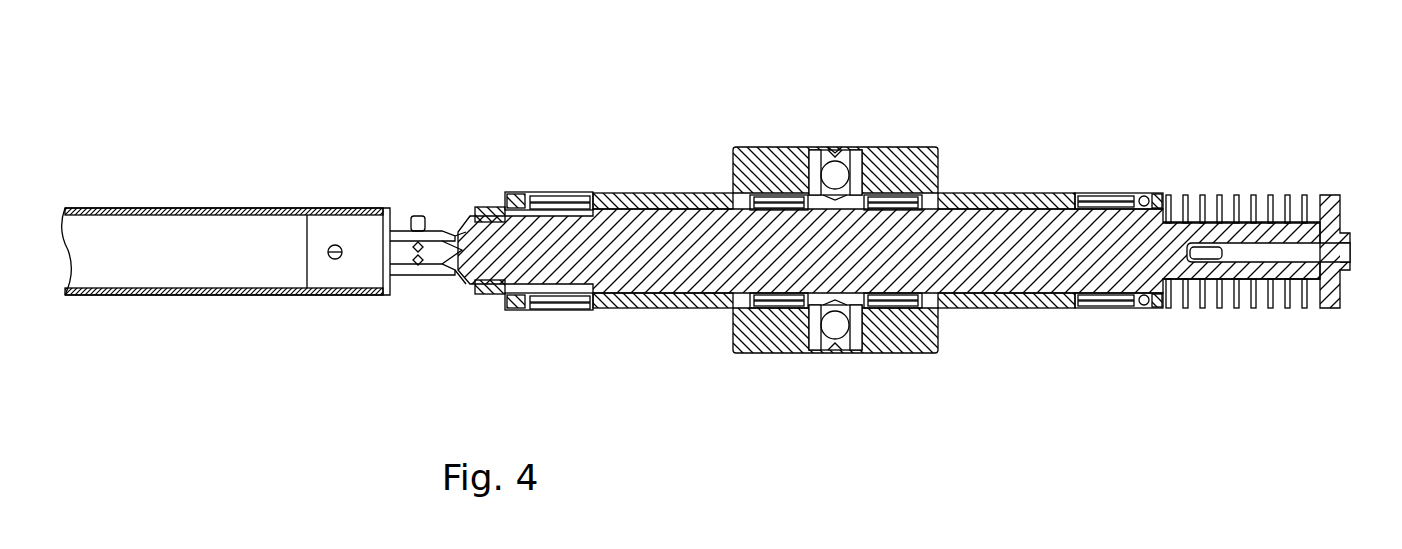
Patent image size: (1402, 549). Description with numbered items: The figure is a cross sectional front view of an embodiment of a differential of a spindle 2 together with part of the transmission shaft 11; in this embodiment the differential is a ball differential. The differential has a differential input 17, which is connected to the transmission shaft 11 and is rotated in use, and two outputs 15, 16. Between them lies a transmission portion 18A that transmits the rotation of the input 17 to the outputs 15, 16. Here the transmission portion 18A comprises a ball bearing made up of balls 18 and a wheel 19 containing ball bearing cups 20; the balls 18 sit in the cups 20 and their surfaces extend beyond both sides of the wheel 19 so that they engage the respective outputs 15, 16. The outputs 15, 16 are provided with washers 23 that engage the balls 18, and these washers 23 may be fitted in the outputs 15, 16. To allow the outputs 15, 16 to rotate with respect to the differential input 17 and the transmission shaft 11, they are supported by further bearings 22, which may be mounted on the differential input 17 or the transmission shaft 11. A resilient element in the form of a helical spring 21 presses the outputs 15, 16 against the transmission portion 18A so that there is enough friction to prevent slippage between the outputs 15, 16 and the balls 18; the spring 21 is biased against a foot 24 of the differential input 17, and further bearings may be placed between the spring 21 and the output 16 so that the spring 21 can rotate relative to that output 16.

The instrument 2 is at (311, 355).
The transmission shaft 11 is at (170, 235).
The differential output 15 is at (610, 310).
The differential output 16 is at (971, 310).
The differential input 17 is at (615, 240).
The balls 18 is at (845, 355).
The transmission portion 18A is at (818, 138).
The wheel 19 is at (838, 153).
The ball bearing cups 20 is at (830, 353).
The helical spring 21 is at (1211, 308).
The further bearings 22 is at (510, 308).
The washers 23 is at (807, 150).
The foot 24 is at (1322, 308).